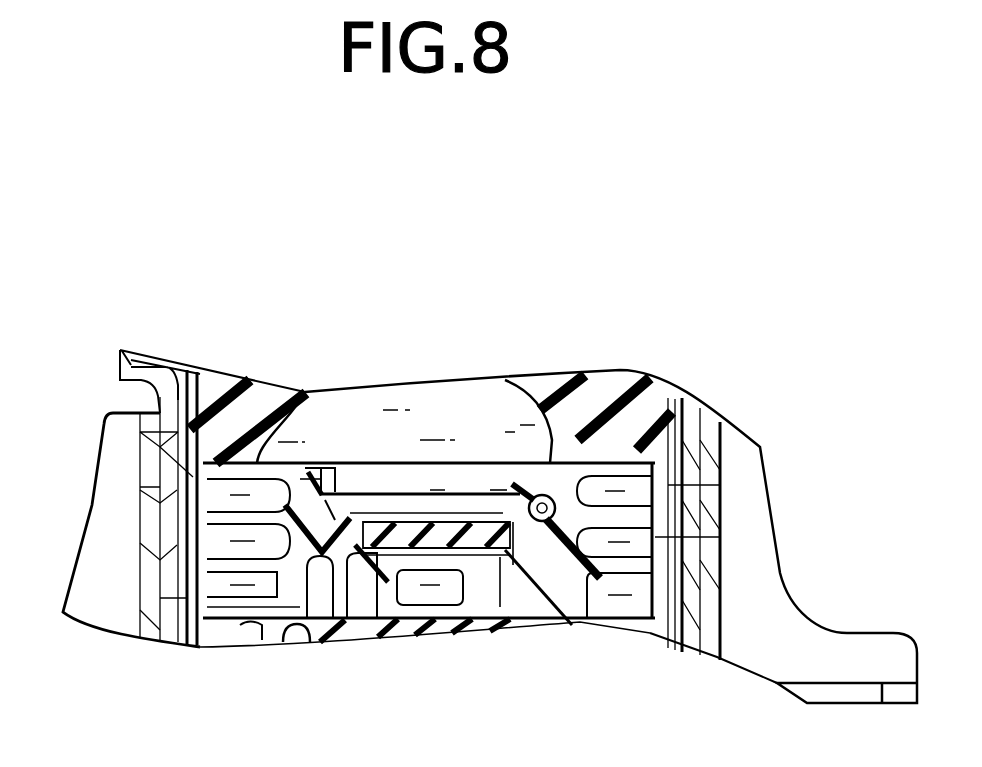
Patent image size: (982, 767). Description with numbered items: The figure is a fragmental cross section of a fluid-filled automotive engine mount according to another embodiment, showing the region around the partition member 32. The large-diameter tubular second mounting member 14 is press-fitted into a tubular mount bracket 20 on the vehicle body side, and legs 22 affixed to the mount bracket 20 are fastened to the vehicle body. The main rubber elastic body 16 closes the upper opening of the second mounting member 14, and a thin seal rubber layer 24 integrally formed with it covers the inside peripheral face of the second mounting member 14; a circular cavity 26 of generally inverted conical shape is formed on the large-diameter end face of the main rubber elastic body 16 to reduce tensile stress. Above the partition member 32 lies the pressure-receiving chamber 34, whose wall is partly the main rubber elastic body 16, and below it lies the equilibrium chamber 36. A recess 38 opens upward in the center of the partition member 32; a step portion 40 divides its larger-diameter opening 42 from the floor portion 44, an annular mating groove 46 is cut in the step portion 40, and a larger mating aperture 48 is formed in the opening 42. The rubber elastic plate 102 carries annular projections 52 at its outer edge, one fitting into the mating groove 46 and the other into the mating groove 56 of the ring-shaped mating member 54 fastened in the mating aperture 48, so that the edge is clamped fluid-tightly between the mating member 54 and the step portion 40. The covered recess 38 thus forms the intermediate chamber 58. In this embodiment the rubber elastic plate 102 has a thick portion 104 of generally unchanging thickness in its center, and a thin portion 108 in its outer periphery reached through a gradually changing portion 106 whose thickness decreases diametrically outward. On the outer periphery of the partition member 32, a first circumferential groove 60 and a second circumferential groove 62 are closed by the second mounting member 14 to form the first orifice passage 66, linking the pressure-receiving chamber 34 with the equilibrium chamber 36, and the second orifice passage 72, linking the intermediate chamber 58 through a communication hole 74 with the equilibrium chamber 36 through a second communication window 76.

The second mounting member 14 is at (665, 592).
The main rubber elastic body 16 is at (266, 388).
The mount bracket 20 is at (175, 445).
The legs 22 is at (710, 635).
The seal rubber layer 24 is at (680, 490).
The circular cavity 26 is at (560, 435).
The partition member 32 is at (175, 503).
The pressure-receiving chamber 34 is at (443, 410).
The equilibrium chamber 36 is at (258, 637).
The recess 38 is at (358, 600).
The step portion 40 is at (372, 618).
The opening 42 is at (507, 515).
The floor portion 44 is at (418, 610).
The mating groove 46 is at (300, 642).
The mating aperture 48 is at (345, 495).
The annular projections 52 is at (350, 523).
The mating member 54 is at (527, 507).
The mating groove 56 is at (552, 495).
The intermediate chamber 58 is at (497, 585).
The first circumferential groove 60 is at (655, 538).
The second circumferential groove 62 is at (200, 590).
The first orifice passage 66 is at (230, 545).
The second orifice passage 72 is at (200, 578).
The communication hole 74 is at (457, 603).
The second communication window 76 is at (602, 607).
The rubber elastic plate 102 is at (410, 510).
The thick portion 104 is at (463, 517).
The gradually changing portion 106 is at (490, 565).
The thin portion 108 is at (377, 507).